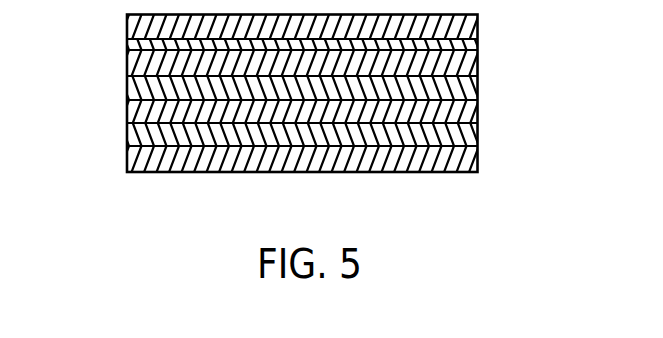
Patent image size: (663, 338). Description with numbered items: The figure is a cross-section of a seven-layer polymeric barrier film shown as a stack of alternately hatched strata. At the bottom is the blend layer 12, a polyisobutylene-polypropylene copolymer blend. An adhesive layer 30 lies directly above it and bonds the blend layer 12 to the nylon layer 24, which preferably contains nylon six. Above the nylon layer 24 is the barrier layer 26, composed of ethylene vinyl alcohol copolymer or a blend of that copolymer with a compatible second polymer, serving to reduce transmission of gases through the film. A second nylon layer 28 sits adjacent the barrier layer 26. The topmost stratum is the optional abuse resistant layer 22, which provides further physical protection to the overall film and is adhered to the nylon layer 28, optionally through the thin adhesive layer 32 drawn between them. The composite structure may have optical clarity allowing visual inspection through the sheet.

The blend layer 12 is at (472, 153).
The abuse resistant layer 22 is at (474, 27).
The nylon layer 24 is at (472, 112).
The barrier layer 26 is at (470, 87).
The nylon layer 28 is at (472, 62).
The adhesive layer 30 is at (472, 137).
The adhesive layer 32 is at (129, 44).